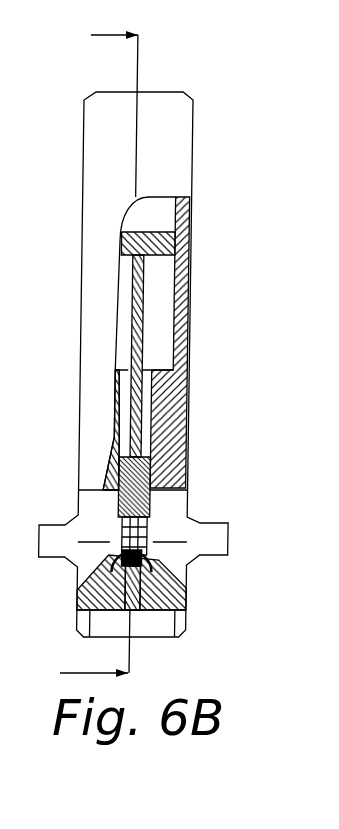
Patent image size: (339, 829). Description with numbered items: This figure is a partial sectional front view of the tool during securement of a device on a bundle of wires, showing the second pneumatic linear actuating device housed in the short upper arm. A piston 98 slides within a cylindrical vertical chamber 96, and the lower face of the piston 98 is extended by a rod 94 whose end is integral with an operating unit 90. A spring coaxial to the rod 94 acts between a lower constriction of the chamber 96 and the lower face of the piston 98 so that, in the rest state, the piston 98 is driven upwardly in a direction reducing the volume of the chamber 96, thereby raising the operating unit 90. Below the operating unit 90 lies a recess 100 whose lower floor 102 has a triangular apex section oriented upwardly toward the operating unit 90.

The operating unit 90 is at (167, 481).
The rod 94 is at (147, 318).
The cylindrical vertical chamber 96 is at (153, 218).
The piston 98 is at (148, 244).
The recess 100 is at (172, 505).
The lower floor 102 is at (173, 567).